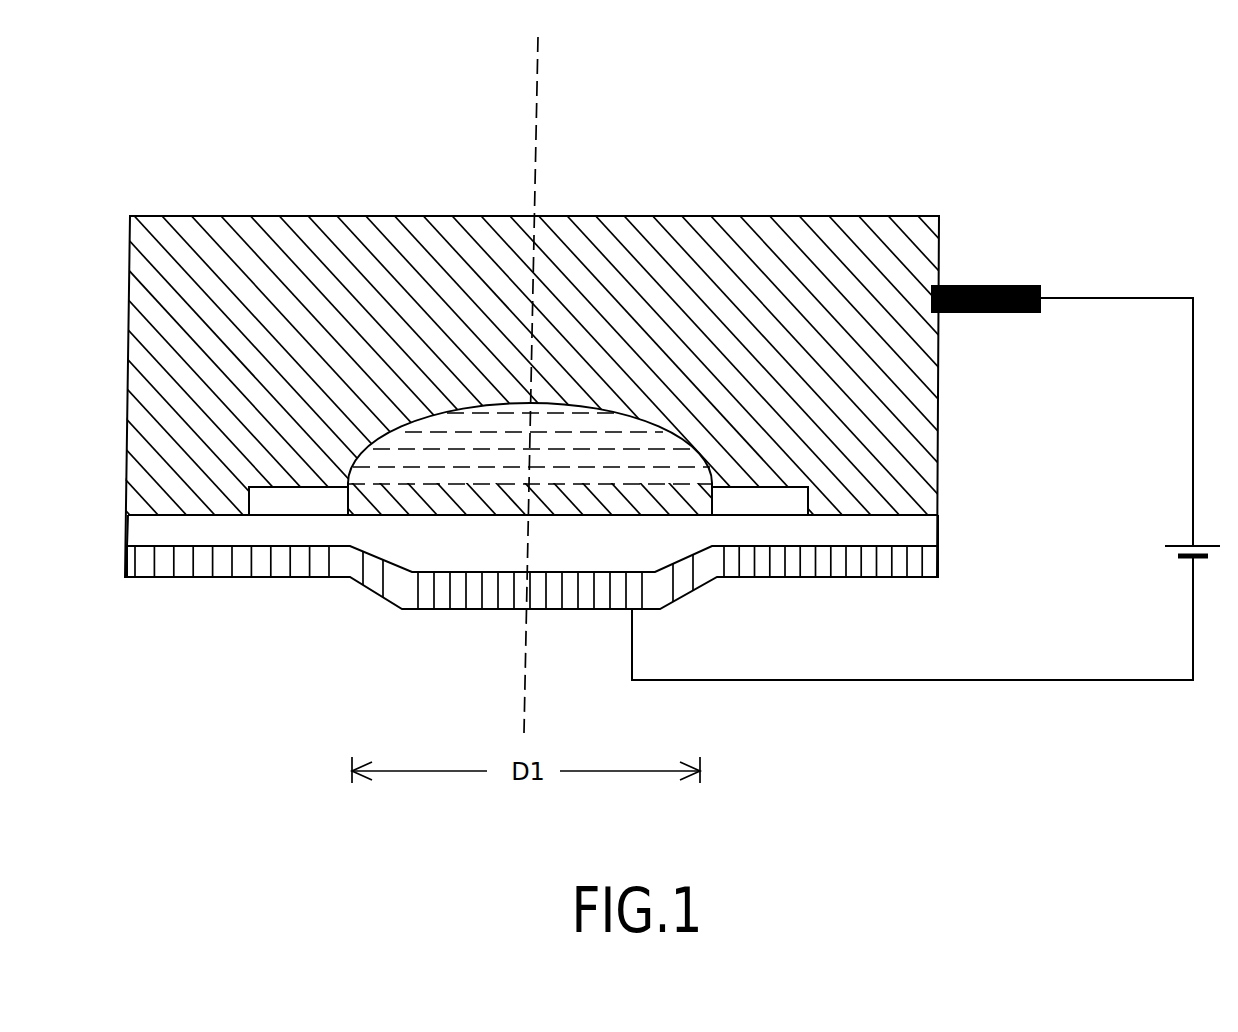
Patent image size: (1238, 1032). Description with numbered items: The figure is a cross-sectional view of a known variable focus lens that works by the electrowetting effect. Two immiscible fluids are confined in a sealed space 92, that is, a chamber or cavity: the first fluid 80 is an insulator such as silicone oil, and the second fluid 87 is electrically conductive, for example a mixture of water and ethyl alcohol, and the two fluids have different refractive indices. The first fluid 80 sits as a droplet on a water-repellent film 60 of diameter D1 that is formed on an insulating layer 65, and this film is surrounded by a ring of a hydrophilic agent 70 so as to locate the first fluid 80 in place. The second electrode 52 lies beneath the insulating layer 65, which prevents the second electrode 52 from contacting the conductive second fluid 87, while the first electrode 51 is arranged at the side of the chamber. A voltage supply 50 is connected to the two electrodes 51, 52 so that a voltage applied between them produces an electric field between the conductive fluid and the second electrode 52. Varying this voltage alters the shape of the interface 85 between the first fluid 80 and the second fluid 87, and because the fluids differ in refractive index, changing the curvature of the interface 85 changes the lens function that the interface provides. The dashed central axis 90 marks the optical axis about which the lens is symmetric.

The voltage supply 50 is at (1212, 545).
The first electrode 51 is at (1020, 285).
The second electrode 52 is at (655, 583).
The water-repellent film 60 is at (398, 515).
The insulating layer 65 is at (925, 527).
The hydrophilic agent 70 is at (283, 500).
The first fluid 80 is at (633, 453).
The interface 85 is at (367, 447).
The second fluid 87 is at (825, 255).
The optical axis 90 is at (526, 693).
The sealed space 92 is at (188, 228).